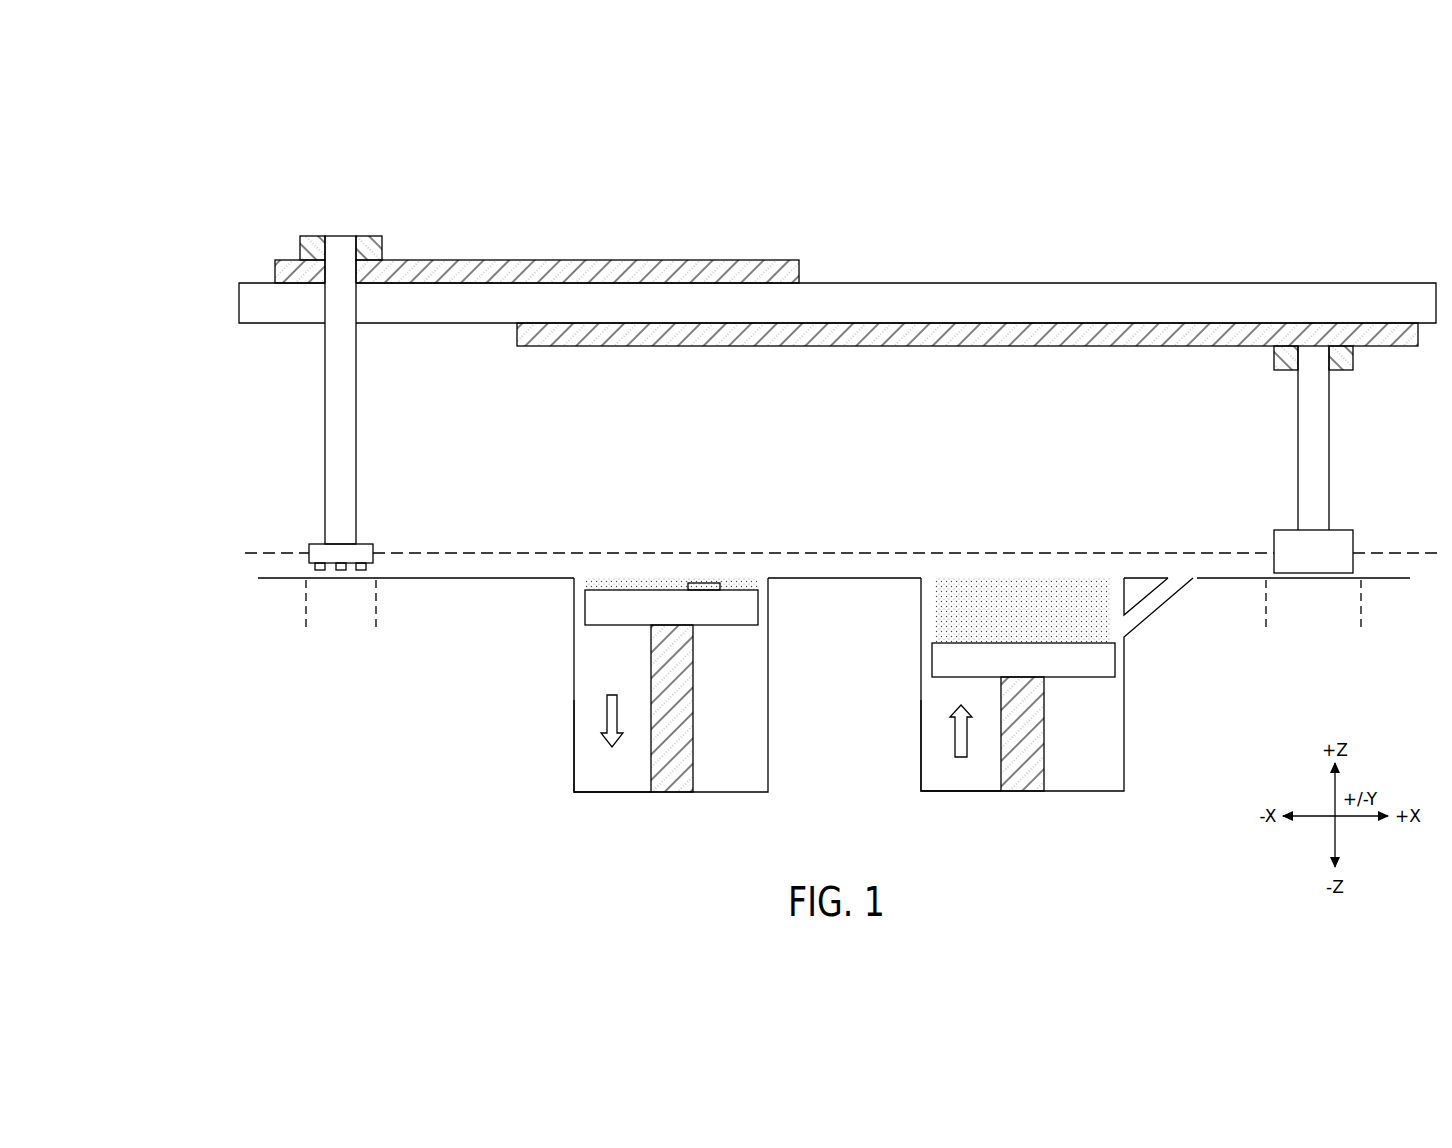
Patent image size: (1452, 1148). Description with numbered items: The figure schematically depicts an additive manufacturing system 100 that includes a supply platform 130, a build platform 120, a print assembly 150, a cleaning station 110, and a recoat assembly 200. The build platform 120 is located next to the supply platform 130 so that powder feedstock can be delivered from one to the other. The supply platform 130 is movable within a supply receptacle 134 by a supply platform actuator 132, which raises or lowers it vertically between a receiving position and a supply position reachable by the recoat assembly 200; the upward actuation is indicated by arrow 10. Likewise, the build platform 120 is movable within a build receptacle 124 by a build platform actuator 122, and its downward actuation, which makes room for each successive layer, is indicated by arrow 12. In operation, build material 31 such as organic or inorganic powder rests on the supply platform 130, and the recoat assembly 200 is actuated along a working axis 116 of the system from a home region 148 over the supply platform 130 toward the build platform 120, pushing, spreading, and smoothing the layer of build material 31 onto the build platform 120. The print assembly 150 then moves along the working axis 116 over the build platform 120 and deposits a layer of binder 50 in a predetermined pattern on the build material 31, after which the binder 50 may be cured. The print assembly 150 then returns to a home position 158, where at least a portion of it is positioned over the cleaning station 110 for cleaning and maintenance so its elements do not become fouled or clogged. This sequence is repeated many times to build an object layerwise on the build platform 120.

The additive manufacturing system 100 is at (203, 168).
The print assembly 150 is at (298, 540).
The recoat assembly 200 is at (1337, 518).
The working axis 116 is at (1403, 553).
The cleaning station 110 is at (327, 615).
The home position 158 is at (360, 617).
The home region 148 is at (1313, 618).
The build platform 120 is at (641, 695).
The build platform actuator 122 is at (695, 772).
The build receptacle 124 is at (596, 768).
The arrow 12 is at (606, 707).
The binder 50 is at (702, 582).
The build material 31 is at (720, 578).
The supply platform 130 is at (1037, 726).
The supply platform actuator 132 is at (1045, 772).
The supply receptacle 134 is at (965, 770).
The arrow 10 is at (953, 727).